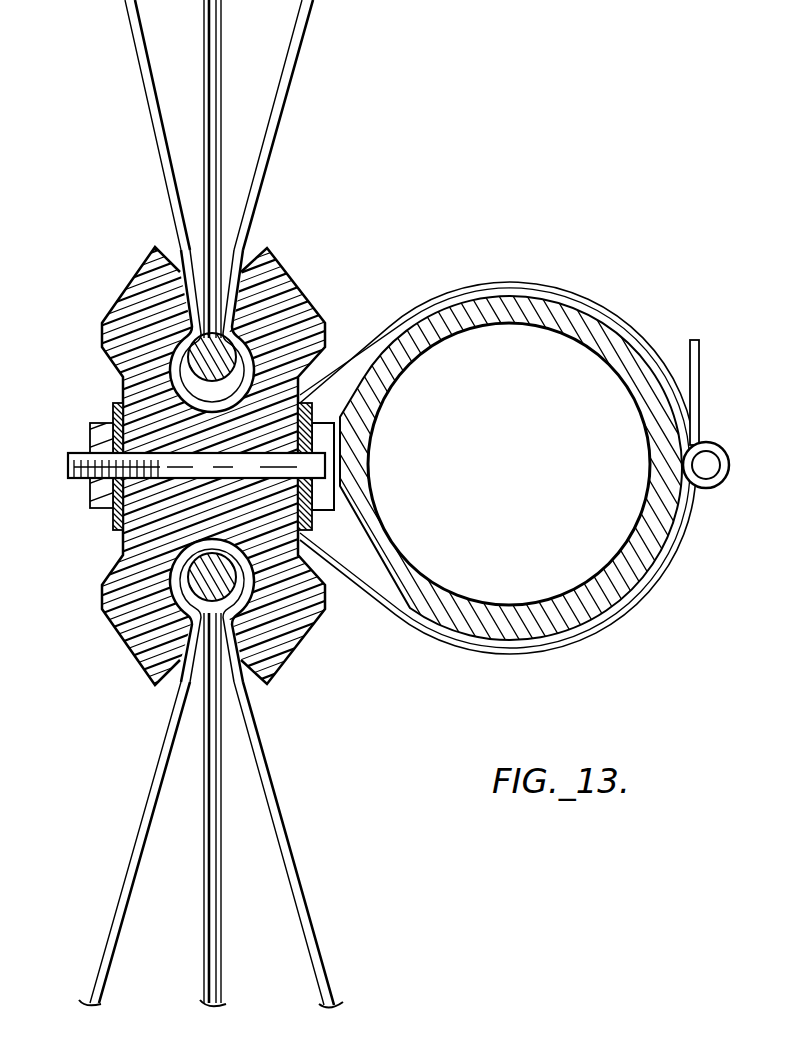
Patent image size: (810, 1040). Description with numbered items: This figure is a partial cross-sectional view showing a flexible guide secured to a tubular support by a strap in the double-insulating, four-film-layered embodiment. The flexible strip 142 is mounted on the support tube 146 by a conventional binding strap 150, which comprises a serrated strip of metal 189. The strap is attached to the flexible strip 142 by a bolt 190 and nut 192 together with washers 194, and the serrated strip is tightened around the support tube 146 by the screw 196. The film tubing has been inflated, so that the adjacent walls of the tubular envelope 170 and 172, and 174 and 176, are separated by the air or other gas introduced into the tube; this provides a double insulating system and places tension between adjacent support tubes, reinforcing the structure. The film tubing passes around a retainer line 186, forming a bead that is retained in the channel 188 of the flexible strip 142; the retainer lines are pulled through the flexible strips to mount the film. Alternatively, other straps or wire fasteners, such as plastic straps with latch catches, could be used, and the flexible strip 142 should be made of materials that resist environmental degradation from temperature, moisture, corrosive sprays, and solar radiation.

The flexible strip 142 is at (291, 279).
The support tube 146 is at (544, 310).
The binding strap 150 is at (690, 542).
The tubular envelope wall 170 is at (160, 776).
The tubular envelope wall 172 is at (205, 806).
The tubular envelope wall 174 is at (220, 770).
The tubular envelope wall 176 is at (282, 817).
The retainer line 186 is at (205, 578).
The channel 188 is at (258, 566).
The serrated strip of metal 189 is at (689, 348).
The bolt 190 is at (326, 474).
The nut 192 is at (95, 500).
The washers 194 is at (342, 414).
The screw 196 is at (704, 445).